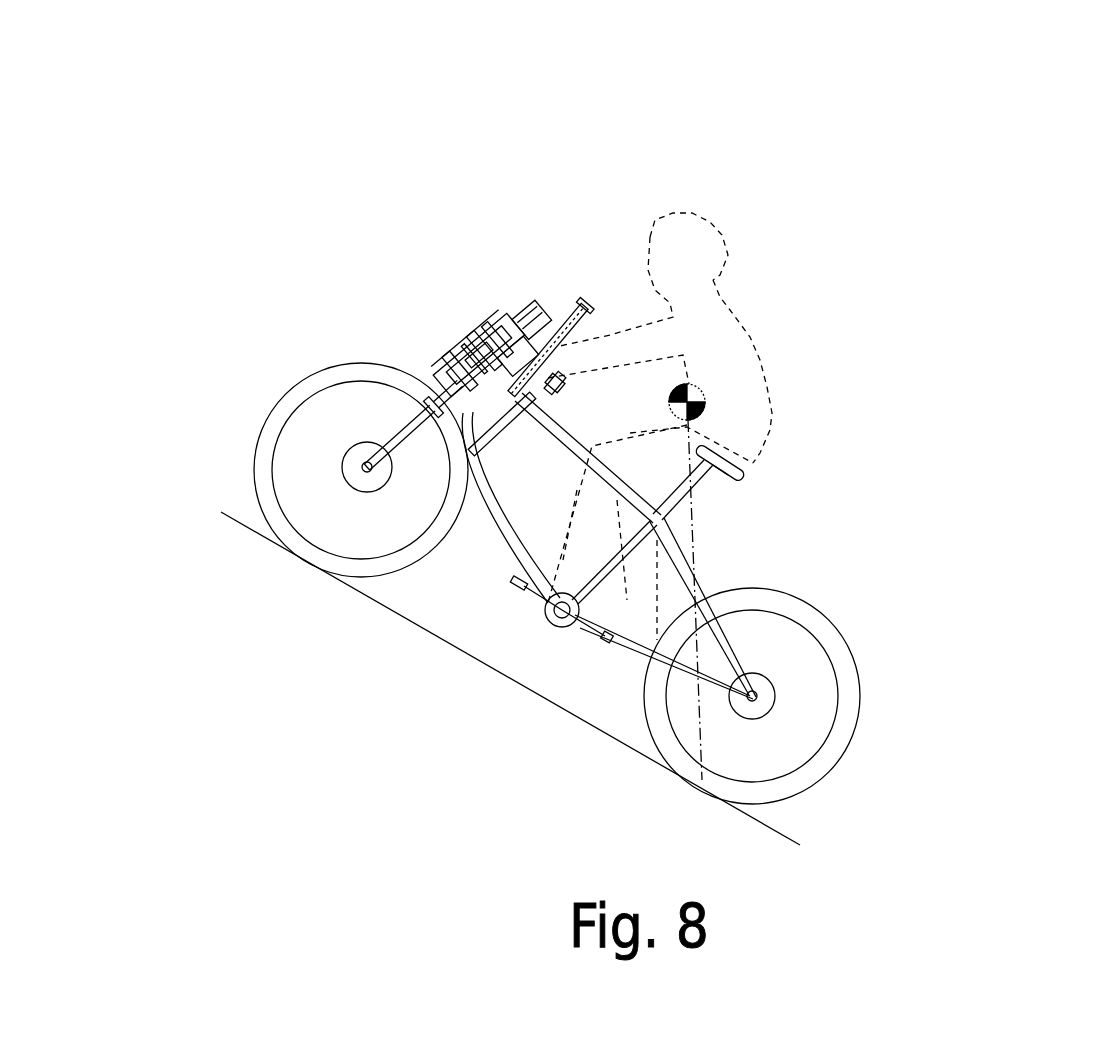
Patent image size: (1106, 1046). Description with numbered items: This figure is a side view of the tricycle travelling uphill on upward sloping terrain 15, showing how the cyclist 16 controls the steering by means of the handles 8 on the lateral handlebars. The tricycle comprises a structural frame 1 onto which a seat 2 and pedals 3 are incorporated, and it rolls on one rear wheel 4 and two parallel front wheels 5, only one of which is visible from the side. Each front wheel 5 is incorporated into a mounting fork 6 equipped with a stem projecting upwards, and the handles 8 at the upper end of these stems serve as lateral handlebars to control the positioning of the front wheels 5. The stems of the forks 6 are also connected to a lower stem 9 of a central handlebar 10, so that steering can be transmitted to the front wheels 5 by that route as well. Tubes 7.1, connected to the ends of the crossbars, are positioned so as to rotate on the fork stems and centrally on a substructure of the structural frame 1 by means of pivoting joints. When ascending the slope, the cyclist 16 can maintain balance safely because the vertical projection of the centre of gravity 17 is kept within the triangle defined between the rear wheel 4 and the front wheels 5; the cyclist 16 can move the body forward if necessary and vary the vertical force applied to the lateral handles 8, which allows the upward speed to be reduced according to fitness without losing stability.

The structural frame 1 is at (596, 466).
The seat 2 is at (738, 468).
The pedals 3 is at (607, 637).
The rear wheel 4 is at (838, 655).
The front wheels 5 is at (265, 437).
The mounting forks 6 is at (403, 440).
The tubes 7.1 is at (488, 370).
The handles 8 is at (548, 377).
The lower stem 9 is at (557, 327).
The central handlebar 10 is at (587, 300).
The upward sloping terrain 15 is at (265, 538).
The cyclist 16 is at (708, 327).
The centre of gravity 17 is at (690, 401).